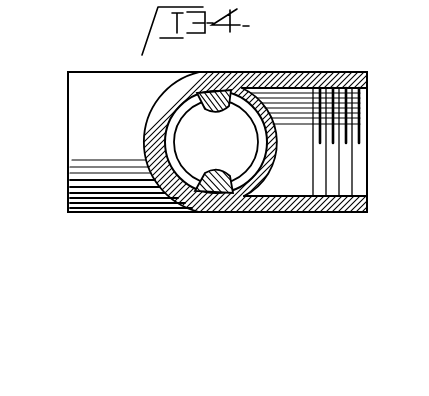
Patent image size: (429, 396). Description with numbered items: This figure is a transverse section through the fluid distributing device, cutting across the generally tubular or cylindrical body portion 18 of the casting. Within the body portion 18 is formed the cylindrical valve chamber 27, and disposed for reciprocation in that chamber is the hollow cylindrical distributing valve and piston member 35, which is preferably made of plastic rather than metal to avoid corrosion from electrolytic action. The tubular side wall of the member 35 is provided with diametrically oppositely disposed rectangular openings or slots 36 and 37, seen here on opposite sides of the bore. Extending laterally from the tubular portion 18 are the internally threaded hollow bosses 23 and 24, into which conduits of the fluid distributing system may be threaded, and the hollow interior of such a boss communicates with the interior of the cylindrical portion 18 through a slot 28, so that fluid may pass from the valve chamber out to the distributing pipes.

The tubular body portion 18 is at (206, 196).
The hollow boss 23 is at (352, 153).
The hollow boss 24 is at (75, 167).
The cylindrical valve chamber 27 is at (162, 176).
The slot 28 is at (299, 88).
The distributing valve and piston member 35 is at (229, 91).
The rectangular opening 36 is at (259, 153).
The rectangular opening 37 is at (168, 125).